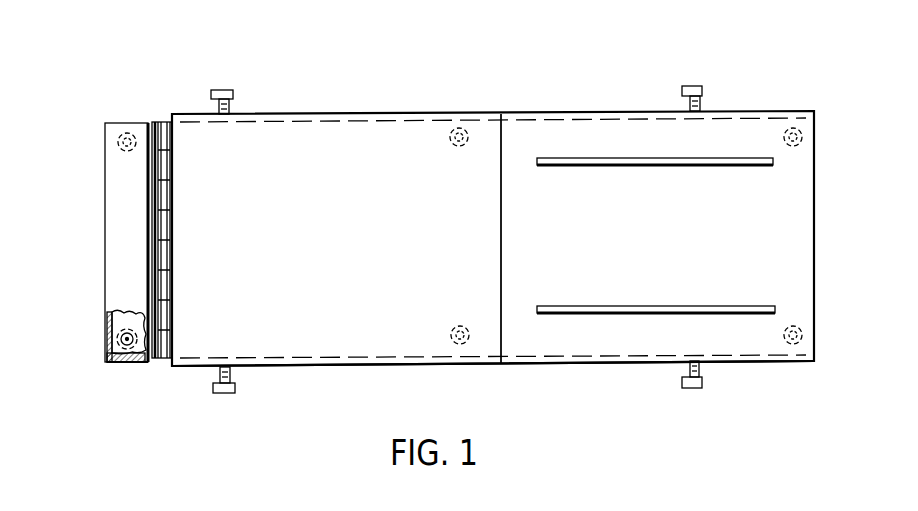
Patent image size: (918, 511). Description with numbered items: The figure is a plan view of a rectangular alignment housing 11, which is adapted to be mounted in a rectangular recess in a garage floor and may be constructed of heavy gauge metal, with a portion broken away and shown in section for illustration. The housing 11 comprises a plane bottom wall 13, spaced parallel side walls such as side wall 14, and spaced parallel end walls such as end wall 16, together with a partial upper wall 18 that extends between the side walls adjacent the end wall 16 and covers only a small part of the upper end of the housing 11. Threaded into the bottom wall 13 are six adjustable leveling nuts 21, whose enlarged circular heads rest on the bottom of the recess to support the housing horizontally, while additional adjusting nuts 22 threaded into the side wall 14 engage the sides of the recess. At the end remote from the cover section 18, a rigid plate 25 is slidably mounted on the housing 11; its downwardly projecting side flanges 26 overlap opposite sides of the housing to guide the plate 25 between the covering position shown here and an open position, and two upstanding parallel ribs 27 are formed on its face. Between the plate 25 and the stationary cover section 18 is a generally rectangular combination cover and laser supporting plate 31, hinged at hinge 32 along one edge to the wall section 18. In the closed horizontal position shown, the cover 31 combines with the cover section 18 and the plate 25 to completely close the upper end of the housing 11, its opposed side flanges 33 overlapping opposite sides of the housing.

The alignment housing 11 is at (461, 90).
The bottom wall 13 is at (118, 322).
The side wall 14 is at (129, 366).
The end wall 16 is at (108, 331).
The partial upper wall 18 is at (105, 240).
The adjustable leveling nut 21 is at (118, 148).
The adjusting nut 22 is at (230, 90).
The rigid plate 25 is at (647, 246).
The side flange 26 is at (603, 363).
The upstanding rib 27 is at (716, 166).
The combination cover and laser supporting plate 31 is at (302, 247).
The hinge 32 is at (164, 118).
The side flange 33 is at (341, 114).